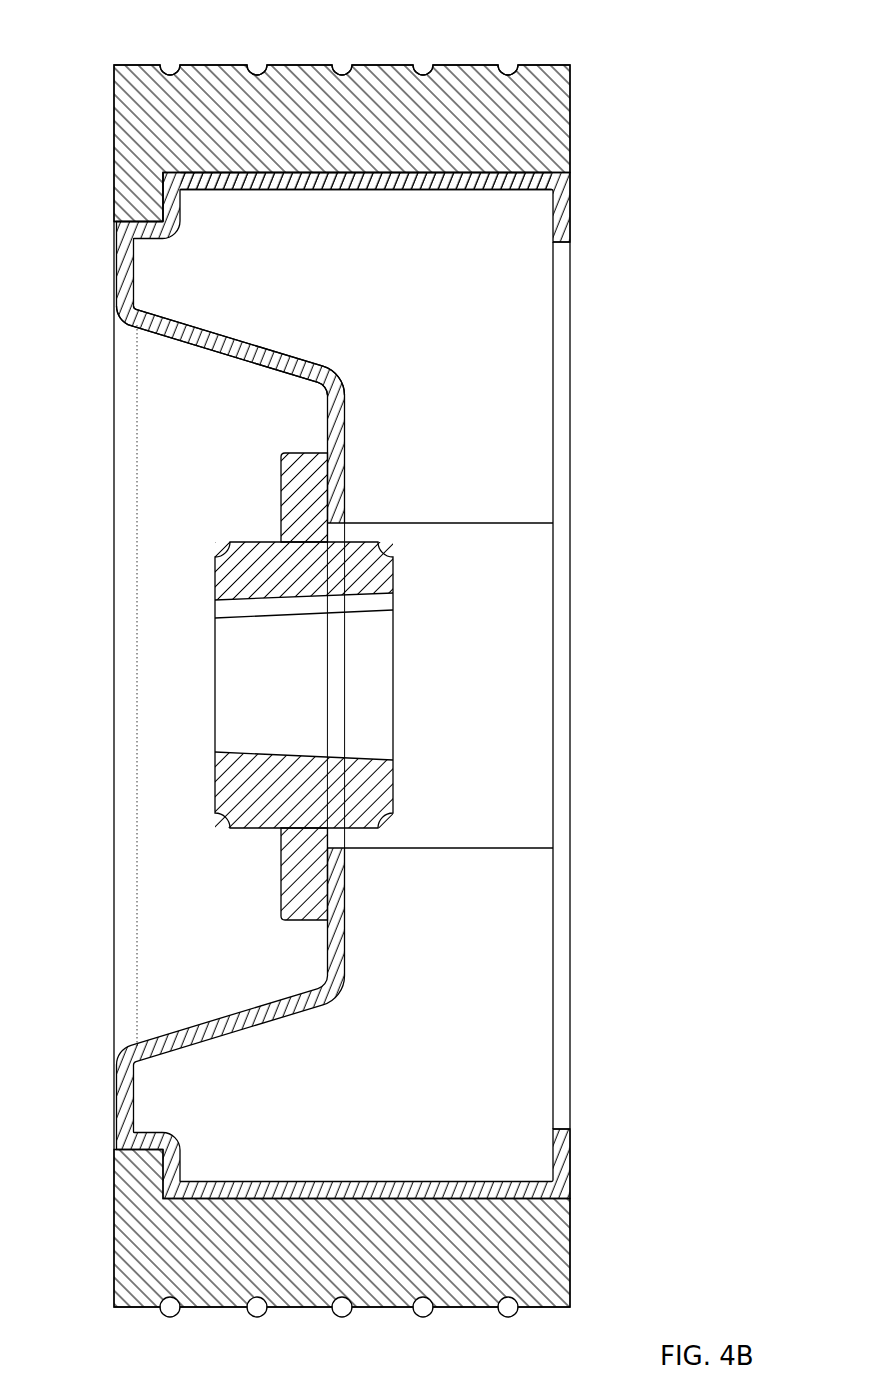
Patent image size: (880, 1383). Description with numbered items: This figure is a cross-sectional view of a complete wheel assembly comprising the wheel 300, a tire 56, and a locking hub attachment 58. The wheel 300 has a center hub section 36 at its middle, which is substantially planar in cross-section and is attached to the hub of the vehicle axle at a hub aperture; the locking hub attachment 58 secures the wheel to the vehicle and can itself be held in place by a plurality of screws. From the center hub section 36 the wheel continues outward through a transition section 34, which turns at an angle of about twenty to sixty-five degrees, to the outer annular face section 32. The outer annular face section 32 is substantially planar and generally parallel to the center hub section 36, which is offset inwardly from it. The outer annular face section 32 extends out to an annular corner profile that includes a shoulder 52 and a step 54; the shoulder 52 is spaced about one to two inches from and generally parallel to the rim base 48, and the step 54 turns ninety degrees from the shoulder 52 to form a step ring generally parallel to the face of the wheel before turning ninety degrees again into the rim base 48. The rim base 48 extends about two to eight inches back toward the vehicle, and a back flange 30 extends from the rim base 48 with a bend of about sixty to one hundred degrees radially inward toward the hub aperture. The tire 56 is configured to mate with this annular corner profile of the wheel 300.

The wheel 300 is at (596, 41).
The tire 56 is at (458, 65).
The back flange 30 is at (572, 1162).
The outer annular face section 32 is at (114, 270).
The rim base 48 is at (366, 172).
The step 54 is at (168, 172).
The shoulder 52 is at (118, 214).
The transition section 34 is at (205, 345).
The center hub section 36 is at (572, 300).
The locking hub attachment 58 is at (213, 686).